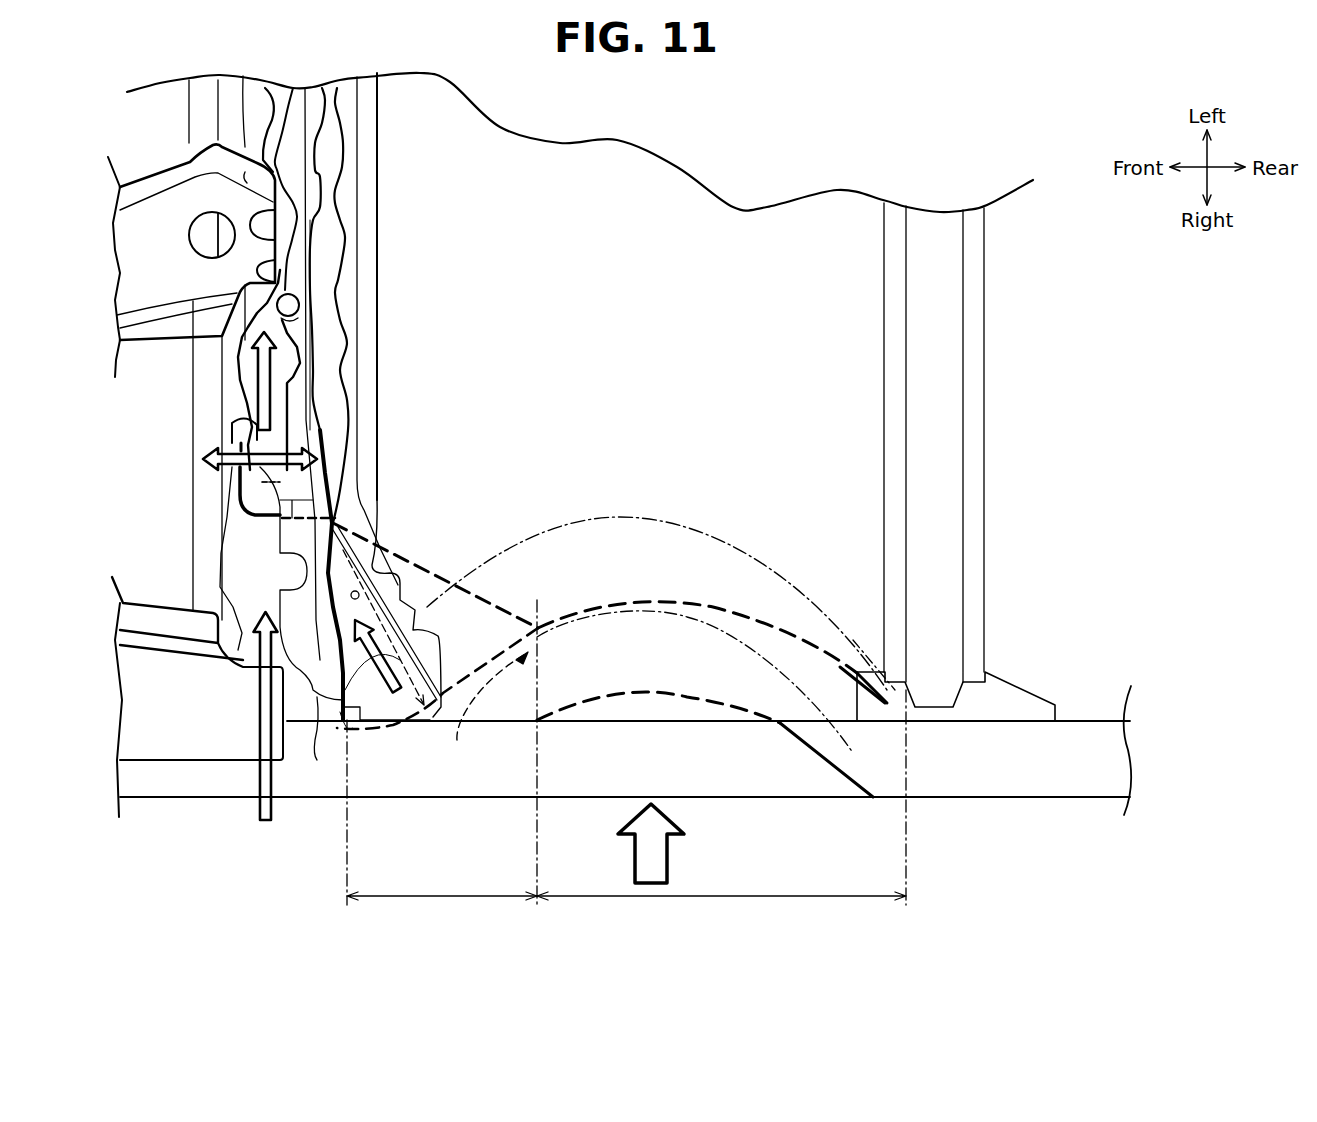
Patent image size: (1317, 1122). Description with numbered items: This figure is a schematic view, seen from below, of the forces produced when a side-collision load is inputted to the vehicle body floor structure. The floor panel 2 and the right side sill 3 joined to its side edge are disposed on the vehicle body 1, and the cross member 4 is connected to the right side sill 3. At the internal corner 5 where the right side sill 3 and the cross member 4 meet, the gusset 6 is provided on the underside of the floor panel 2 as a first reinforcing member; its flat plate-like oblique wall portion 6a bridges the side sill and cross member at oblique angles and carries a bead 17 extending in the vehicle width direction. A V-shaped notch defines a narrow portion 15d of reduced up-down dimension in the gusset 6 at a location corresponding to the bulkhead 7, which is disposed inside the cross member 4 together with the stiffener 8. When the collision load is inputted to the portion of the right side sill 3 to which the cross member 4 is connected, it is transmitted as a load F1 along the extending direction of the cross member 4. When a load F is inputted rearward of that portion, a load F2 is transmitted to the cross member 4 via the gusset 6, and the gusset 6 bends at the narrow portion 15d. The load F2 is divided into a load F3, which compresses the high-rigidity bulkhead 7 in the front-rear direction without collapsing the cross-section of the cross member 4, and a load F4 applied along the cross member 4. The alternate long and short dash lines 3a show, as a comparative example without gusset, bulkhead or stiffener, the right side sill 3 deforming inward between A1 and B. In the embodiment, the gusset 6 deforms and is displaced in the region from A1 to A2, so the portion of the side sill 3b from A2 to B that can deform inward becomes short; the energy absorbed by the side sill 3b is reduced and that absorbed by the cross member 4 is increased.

The vehicle body 1 is at (894, 135).
The floor panel 2 is at (670, 349).
The side sill 3 is at (702, 784).
The alternate long and short dash lines 3a is at (630, 512).
The side sill (alternate long and two short dashes lines) 3b is at (716, 607).
The cross member 4 is at (230, 108).
The internal corner 5 is at (353, 727).
The gusset 6 is at (452, 563).
The oblique wall portion 6a is at (410, 563).
The bulkhead 7 is at (255, 535).
The stiffener 8 is at (300, 108).
The narrow portion 15d is at (340, 452).
The bead 17 is at (440, 600).
The load F is at (667, 862).
The load F1 is at (258, 812).
The load F2 is at (351, 705).
The load F3 is at (232, 428).
The load F4 is at (257, 367).
The position A1 is at (434, 829).
The position A2 is at (536, 769).
The position B is at (725, 814).